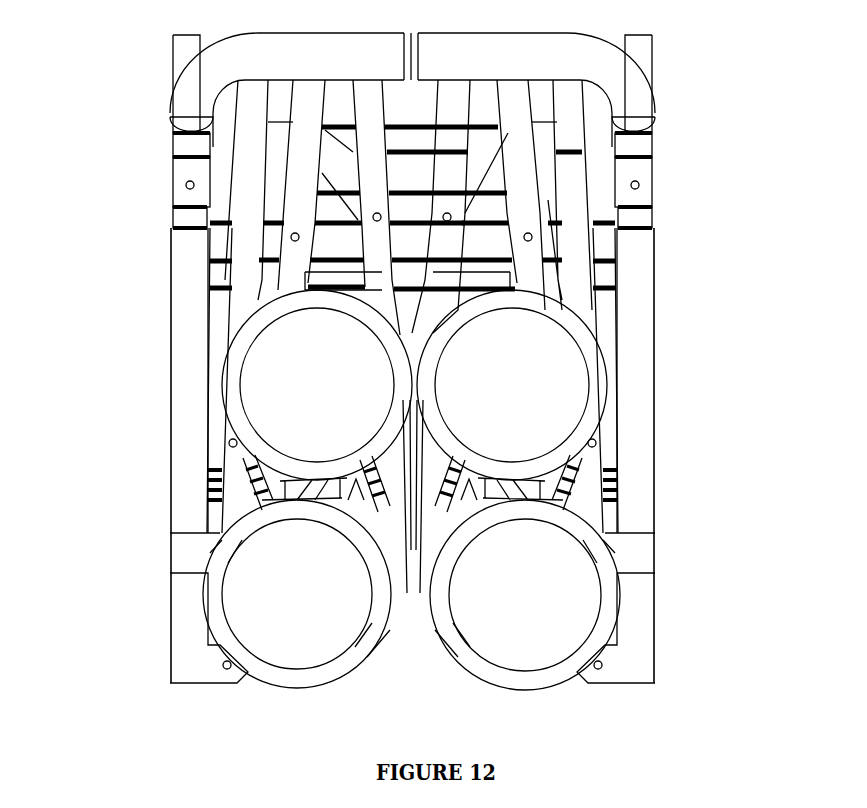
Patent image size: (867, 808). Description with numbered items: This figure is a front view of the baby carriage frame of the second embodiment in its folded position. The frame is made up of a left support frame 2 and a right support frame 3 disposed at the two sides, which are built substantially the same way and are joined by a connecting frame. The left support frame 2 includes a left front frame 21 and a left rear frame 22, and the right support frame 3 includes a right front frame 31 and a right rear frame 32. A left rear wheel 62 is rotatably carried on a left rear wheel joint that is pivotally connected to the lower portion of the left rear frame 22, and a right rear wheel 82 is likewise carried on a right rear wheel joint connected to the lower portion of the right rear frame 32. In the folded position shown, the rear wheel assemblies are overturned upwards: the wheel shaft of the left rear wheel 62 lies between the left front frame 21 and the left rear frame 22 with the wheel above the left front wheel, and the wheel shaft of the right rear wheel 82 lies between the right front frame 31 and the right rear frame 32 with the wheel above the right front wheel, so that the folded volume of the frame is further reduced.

The left support frame 2 is at (660, 296).
The right support frame 3 is at (165, 263).
The left front frame 21 is at (442, 250).
The left rear frame 22 is at (530, 272).
The right front frame 31 is at (380, 272).
The right rear frame 32 is at (307, 163).
The left rear wheel 62 is at (537, 407).
The right rear wheel 82 is at (303, 407).